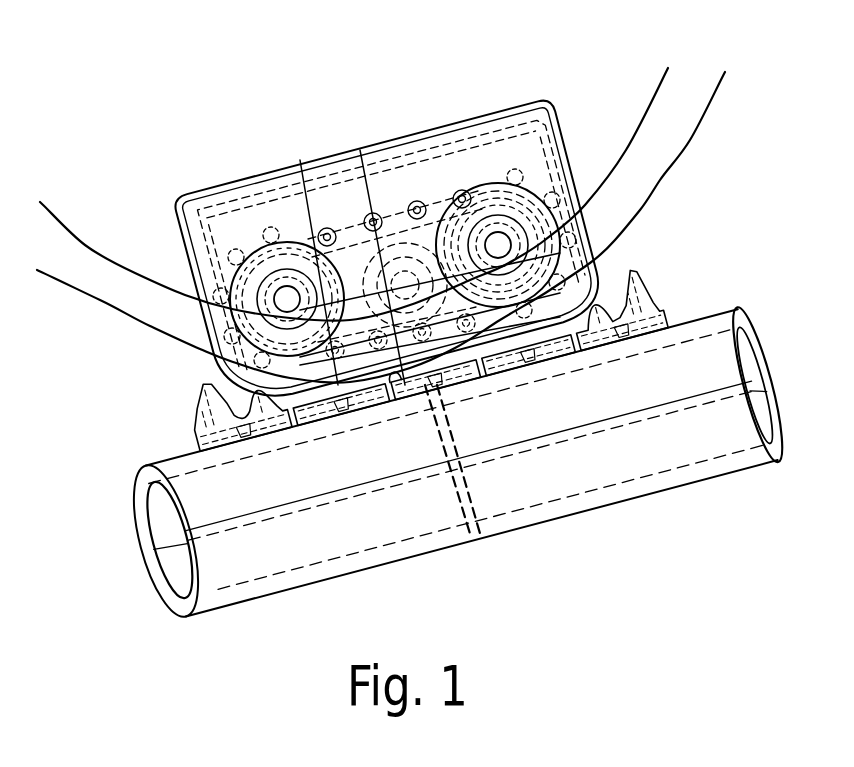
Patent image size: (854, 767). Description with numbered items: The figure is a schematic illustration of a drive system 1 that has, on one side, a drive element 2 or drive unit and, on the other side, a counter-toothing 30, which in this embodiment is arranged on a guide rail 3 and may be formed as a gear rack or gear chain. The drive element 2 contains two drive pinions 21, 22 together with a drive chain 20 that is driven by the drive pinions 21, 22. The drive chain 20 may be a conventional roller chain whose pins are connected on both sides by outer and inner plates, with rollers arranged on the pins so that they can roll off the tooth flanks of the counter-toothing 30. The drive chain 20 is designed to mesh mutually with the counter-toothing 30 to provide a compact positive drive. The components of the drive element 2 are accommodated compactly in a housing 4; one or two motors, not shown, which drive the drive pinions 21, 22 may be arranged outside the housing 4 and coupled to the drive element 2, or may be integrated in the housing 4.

The drive system 1 is at (702, 80).
The drive element 2 is at (353, 130).
The guide rail 3 is at (762, 302).
The housing 4 is at (485, 198).
The drive chain 20 is at (338, 233).
The drive pinion 21 is at (317, 267).
The drive pinion 22 is at (495, 190).
The counter-toothing 30 is at (648, 280).